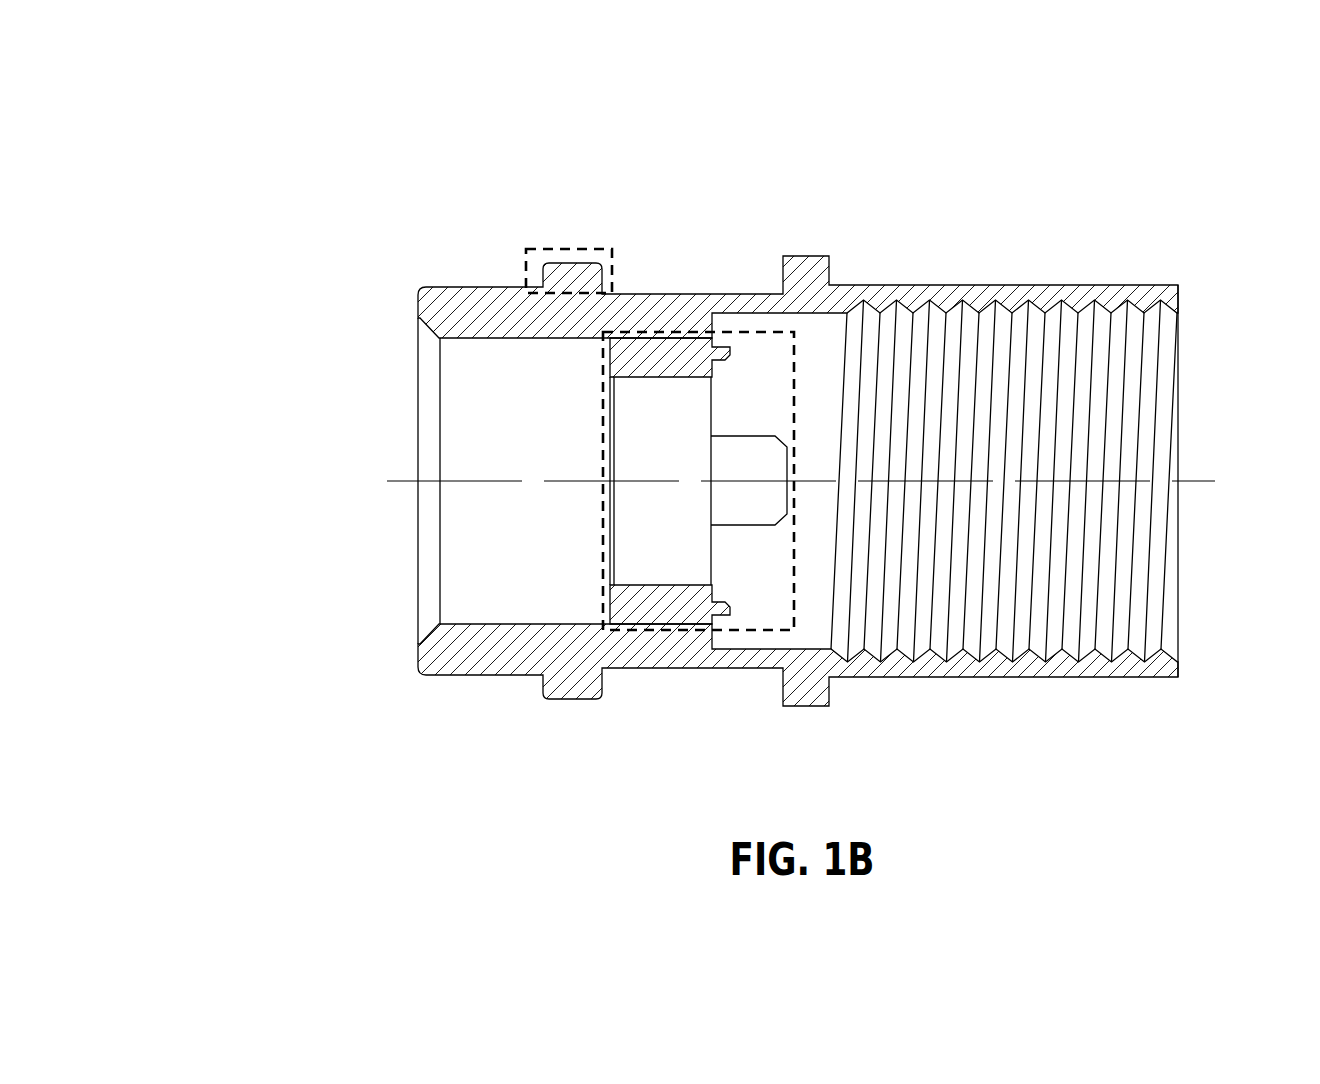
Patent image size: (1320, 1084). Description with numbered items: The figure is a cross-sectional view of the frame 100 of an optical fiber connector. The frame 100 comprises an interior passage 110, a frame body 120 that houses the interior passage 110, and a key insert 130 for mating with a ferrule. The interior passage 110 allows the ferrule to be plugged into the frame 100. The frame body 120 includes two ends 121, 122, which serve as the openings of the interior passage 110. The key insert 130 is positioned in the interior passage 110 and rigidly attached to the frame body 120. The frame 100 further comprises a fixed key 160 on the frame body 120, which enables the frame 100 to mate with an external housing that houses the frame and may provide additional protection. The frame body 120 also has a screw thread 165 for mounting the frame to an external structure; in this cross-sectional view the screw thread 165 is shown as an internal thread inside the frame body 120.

The frame 100 is at (762, 488).
The interior passage 110 is at (505, 522).
The frame body 120 is at (460, 657).
The end 121 is at (393, 447).
The end 122 is at (1217, 613).
The key insert 130 is at (711, 333).
The fixed key 160 is at (569, 250).
The screw thread 165 is at (1093, 342).